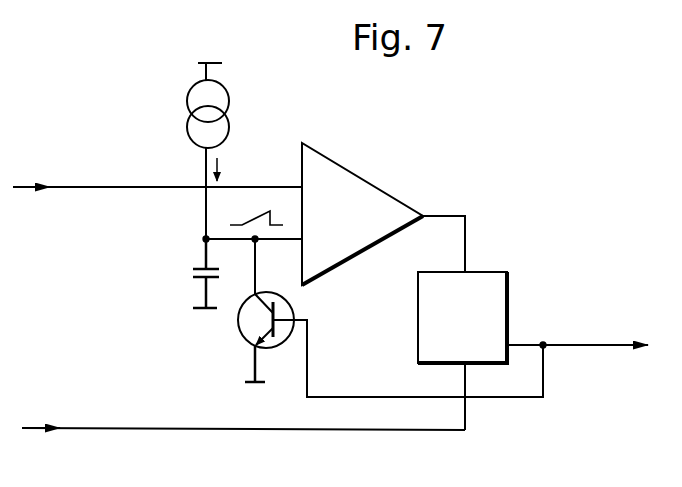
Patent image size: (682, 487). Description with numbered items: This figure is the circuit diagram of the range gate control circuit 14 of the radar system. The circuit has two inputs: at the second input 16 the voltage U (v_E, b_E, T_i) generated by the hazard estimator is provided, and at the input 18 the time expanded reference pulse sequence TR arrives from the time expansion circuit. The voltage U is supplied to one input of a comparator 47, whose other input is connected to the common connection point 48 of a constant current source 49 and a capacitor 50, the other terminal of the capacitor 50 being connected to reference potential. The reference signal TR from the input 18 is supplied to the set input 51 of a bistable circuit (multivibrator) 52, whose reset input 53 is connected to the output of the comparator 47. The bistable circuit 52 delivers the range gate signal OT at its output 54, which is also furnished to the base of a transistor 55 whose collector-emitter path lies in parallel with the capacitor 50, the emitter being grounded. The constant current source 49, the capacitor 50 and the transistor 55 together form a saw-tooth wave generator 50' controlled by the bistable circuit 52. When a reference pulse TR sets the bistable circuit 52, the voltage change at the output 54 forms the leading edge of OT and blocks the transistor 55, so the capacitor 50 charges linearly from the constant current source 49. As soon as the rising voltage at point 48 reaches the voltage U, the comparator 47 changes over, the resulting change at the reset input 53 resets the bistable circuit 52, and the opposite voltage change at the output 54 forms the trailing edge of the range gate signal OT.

The range gate control circuit 14 is at (428, 182).
The second input 16 is at (60, 189).
The input 18 is at (65, 430).
The comparator 47 is at (357, 192).
The common connection point 48 is at (204, 240).
The constant current source 49 is at (214, 111).
The capacitor 50 is at (180, 273).
The saw-tooth wave generator 50' is at (200, 218).
The set input 51 is at (466, 412).
The bistable circuit (multivibrator) 52 is at (435, 326).
The reset input 53 is at (466, 247).
The output 54 is at (622, 349).
The transistor 55 is at (298, 305).